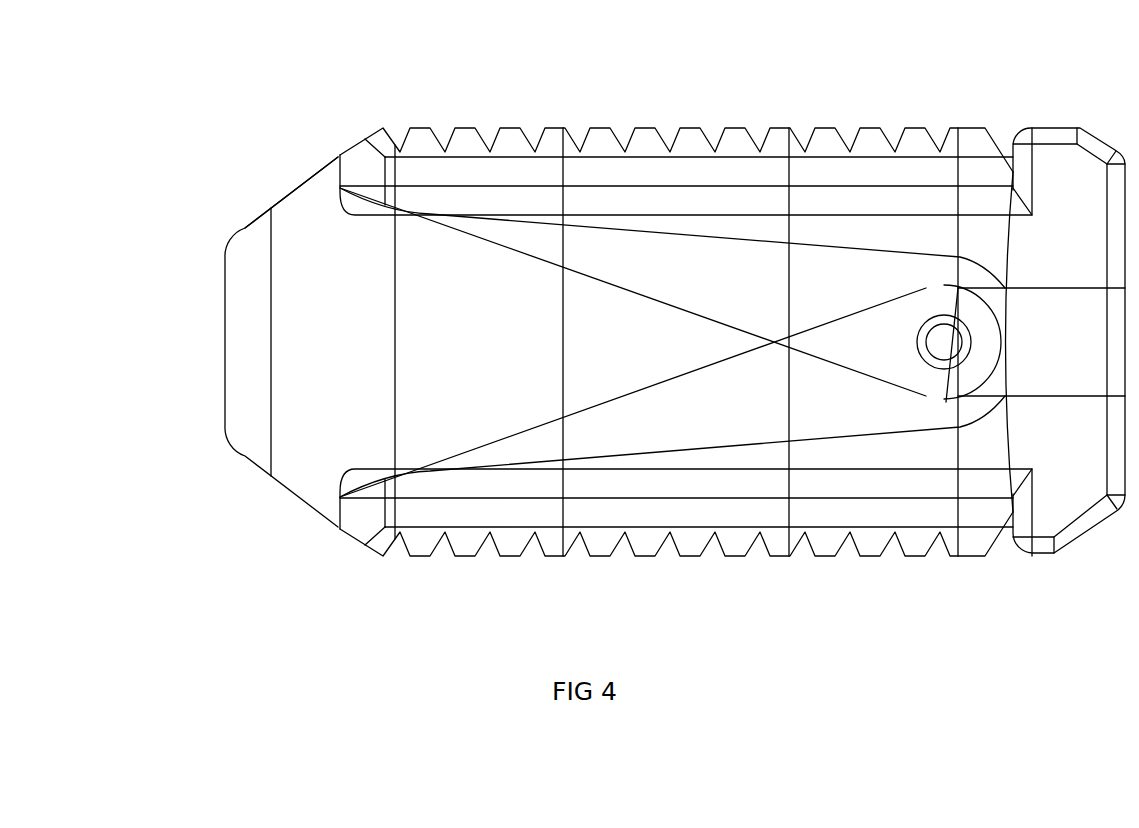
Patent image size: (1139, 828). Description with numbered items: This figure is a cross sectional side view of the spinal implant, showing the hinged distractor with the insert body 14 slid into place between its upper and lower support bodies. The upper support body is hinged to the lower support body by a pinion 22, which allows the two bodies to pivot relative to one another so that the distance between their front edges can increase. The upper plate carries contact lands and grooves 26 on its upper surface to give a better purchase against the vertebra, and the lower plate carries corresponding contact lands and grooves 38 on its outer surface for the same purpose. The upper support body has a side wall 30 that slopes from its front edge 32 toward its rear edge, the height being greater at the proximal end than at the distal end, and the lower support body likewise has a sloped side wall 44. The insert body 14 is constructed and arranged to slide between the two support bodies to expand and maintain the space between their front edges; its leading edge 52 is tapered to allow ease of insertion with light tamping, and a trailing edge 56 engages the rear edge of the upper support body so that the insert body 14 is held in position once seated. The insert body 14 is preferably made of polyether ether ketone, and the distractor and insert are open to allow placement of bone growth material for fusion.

The insert body 14 is at (222, 413).
The pinion 22 is at (932, 362).
The contact lands and grooves 26 is at (565, 130).
The side wall 30 is at (662, 213).
The front edge 32 is at (338, 152).
The contact lands and grooves 38 is at (573, 548).
The side wall 44 is at (758, 402).
The leading edge 52 is at (282, 200).
The trailing edge 56 is at (1022, 127).